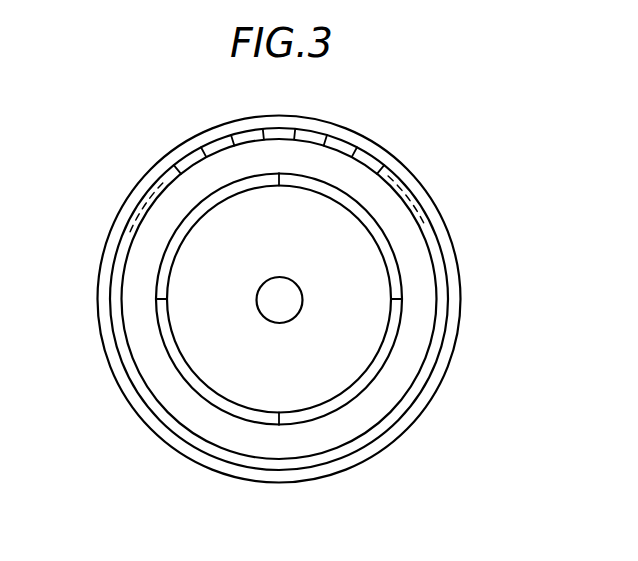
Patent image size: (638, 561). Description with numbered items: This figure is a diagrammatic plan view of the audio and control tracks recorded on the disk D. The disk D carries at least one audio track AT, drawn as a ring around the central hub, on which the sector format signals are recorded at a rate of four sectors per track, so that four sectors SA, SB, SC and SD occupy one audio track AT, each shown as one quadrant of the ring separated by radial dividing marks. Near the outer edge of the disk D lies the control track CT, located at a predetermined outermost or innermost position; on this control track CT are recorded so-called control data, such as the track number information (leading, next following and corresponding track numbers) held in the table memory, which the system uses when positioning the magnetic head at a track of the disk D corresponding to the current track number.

The disk D is at (390, 152).
The control track CT is at (444, 360).
The audio track AT is at (323, 299).
The sector SA is at (373, 225).
The sector SB is at (382, 363).
The sector SC is at (190, 382).
The sector SD is at (178, 238).